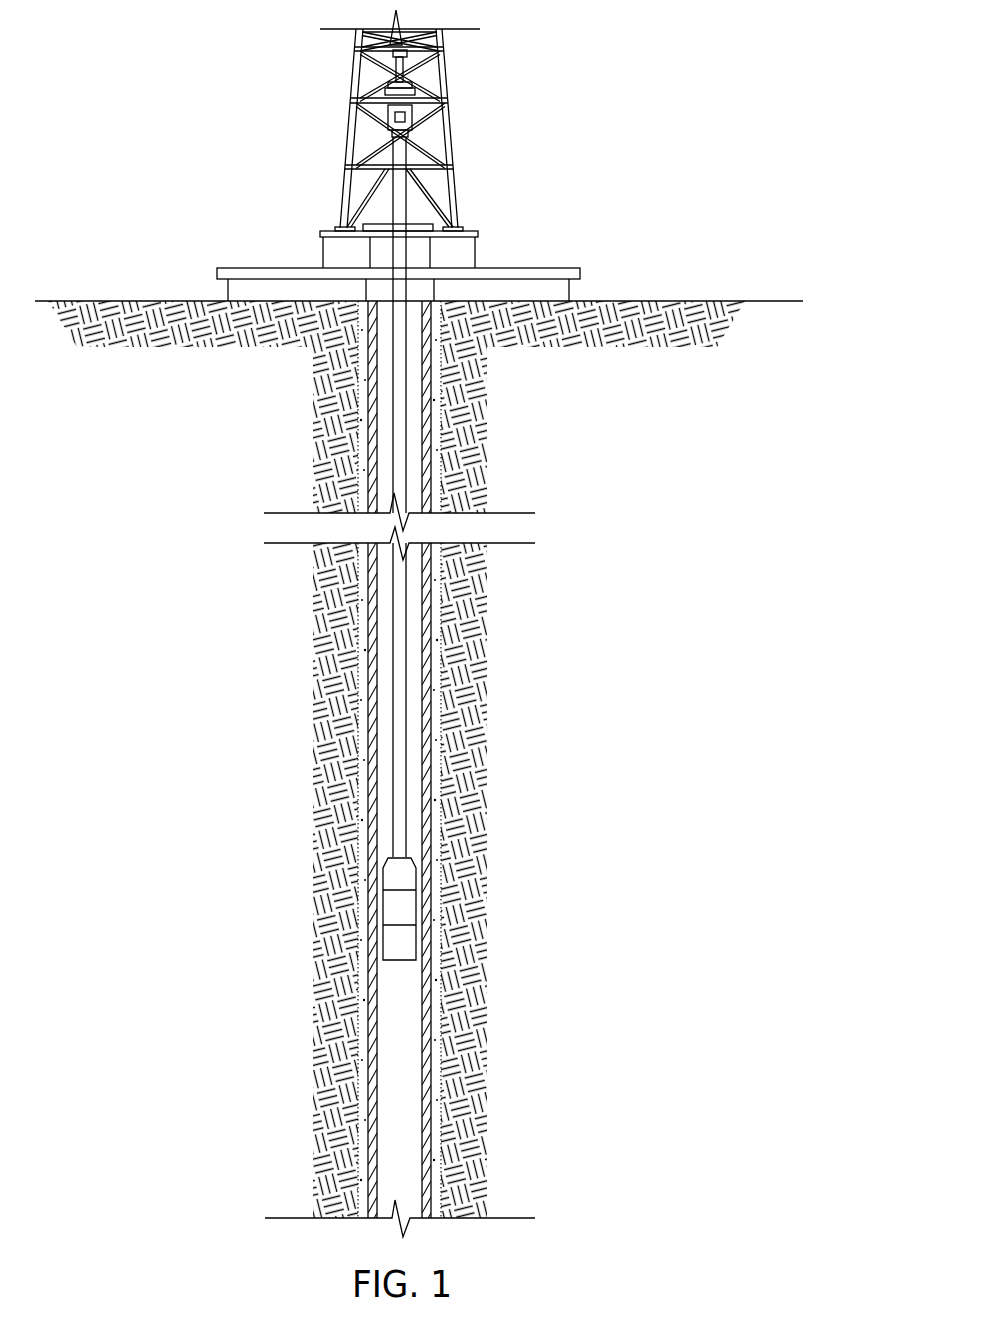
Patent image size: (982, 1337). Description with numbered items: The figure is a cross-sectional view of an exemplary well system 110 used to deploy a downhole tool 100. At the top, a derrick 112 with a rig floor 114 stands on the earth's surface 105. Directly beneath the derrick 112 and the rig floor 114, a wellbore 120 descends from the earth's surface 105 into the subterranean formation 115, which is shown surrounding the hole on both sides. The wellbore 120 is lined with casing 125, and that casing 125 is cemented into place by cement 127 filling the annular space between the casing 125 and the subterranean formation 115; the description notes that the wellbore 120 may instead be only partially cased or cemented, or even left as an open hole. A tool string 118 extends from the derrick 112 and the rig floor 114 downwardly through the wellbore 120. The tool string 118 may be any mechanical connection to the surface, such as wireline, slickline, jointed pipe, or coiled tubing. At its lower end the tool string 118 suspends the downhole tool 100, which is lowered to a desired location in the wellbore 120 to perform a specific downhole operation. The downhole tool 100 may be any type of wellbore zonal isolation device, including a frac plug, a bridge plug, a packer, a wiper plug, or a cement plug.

The downhole tool 100 is at (419, 906).
The earth's surface 105 is at (98, 300).
The well system 110 is at (618, 113).
The derrick 112 is at (348, 131).
The rig floor 114 is at (243, 268).
The subterranean formation 115 is at (473, 1155).
The tool string 118 is at (407, 812).
The wellbore 120 is at (413, 703).
The casing 125 is at (422, 1072).
The cement 127 is at (440, 760).